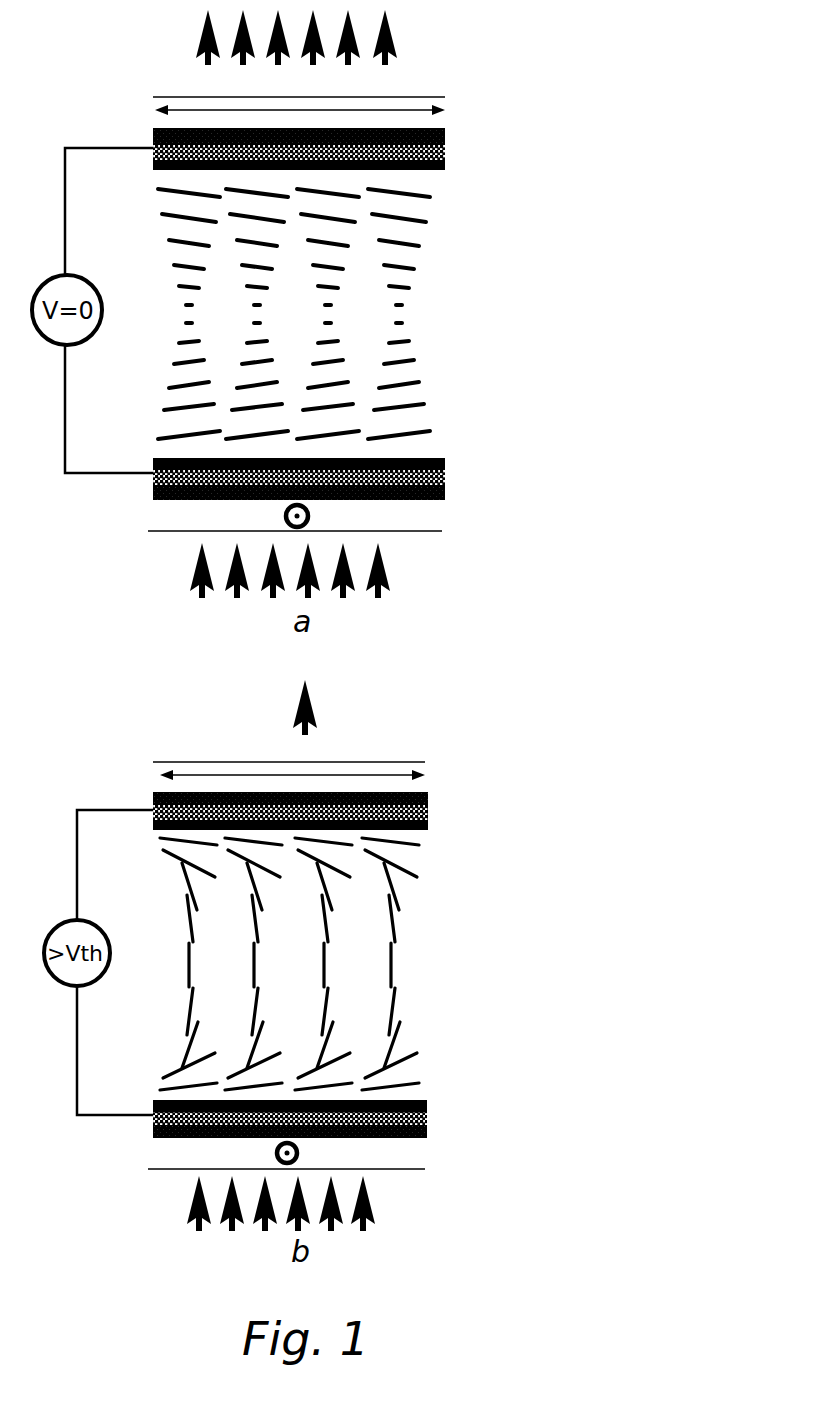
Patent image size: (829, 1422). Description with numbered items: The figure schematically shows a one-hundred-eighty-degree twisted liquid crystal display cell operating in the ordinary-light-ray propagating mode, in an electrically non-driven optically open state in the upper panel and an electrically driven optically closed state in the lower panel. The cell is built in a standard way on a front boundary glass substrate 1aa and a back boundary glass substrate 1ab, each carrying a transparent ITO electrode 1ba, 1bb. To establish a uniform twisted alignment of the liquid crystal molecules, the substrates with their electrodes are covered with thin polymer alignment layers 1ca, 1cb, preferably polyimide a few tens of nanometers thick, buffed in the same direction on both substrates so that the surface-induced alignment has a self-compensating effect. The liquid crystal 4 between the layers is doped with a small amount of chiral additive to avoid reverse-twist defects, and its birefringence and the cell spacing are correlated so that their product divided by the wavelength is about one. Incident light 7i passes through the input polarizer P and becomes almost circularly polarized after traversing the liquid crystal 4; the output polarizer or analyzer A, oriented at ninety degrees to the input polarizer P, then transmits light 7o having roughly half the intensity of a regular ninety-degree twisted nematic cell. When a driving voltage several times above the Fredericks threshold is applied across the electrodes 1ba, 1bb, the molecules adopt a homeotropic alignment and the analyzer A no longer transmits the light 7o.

The back boundary glass substrate 1ab is at (339, 457).
The transparent ITO electrode 1bb is at (339, 479).
The polymer alignment layer 1cb is at (339, 505).
The polymer alignment layer 1ca is at (336, 788).
The transparent ITO electrode 1ba is at (360, 800).
The front boundary glass substrate 1aa is at (336, 819).
The liquid crystal 4 is at (468, 190).
The transmitted light 7o is at (319, 372).
The incident light 7i is at (296, 881).
The input polarizer P is at (305, 836).
The output polarizer A is at (300, 425).